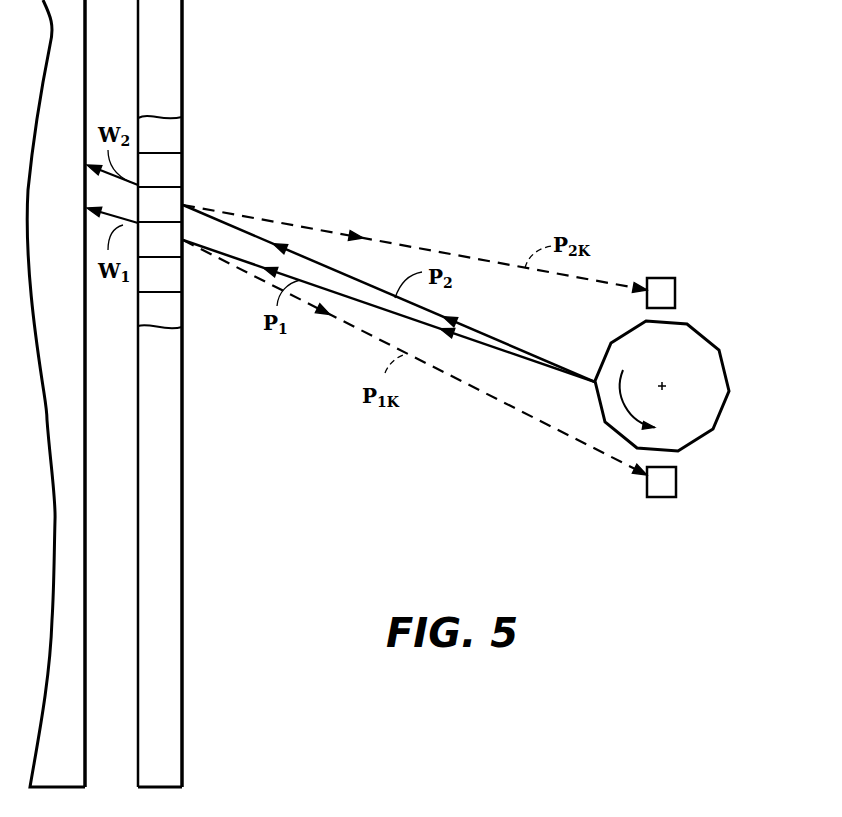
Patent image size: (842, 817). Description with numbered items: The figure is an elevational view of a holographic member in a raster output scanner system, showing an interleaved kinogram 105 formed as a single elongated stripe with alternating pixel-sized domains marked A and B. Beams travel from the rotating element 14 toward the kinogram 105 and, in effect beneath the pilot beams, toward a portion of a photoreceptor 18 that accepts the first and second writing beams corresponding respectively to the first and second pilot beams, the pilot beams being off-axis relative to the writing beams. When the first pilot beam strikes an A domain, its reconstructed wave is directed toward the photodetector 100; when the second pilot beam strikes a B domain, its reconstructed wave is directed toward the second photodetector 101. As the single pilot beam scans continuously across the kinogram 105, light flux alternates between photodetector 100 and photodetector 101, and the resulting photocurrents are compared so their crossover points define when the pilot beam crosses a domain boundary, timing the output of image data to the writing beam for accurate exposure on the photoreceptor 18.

The rotating polygon mirror 14 is at (702, 332).
The photoreceptor 18 is at (85, 663).
The photodetector 100 is at (662, 278).
The second photodetector 101 is at (662, 497).
The interleaved kinogram 105 is at (183, 458).